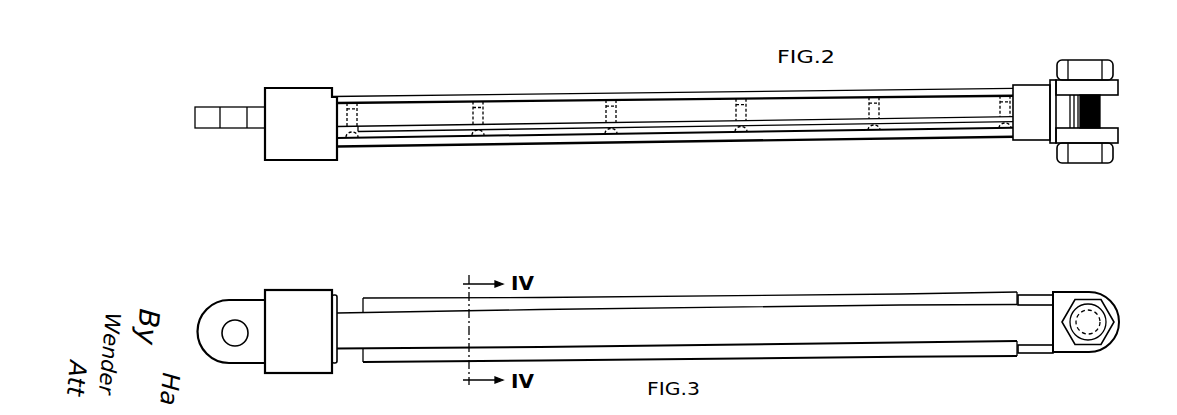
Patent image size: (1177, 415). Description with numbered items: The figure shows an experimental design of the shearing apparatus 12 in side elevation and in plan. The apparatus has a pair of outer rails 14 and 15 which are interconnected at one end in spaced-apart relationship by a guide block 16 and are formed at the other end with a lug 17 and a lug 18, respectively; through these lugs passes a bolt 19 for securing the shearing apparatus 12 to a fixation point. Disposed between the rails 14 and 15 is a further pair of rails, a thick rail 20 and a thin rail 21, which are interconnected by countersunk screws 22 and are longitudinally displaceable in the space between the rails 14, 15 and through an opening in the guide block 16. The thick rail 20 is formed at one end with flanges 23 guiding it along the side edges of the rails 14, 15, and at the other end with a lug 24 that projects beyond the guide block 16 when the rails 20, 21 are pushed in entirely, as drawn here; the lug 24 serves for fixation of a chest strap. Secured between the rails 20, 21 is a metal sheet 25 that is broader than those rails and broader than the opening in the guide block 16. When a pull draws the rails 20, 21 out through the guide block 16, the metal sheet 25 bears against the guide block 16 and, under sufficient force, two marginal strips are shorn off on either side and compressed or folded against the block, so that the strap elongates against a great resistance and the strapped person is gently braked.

In FIG. 2, the shearing apparatus 12 is at (672, 121).
In FIG. 3, the shearing apparatus 12 is at (677, 310).
In FIG. 2, the rail 14 is at (673, 95).
In FIG. 3, the rail 14 is at (897, 312).
In FIG. 2, the rail 15 is at (676, 139).
In FIG. 2, the guide block 16 is at (313, 157).
In FIG. 3, the guide block 16 is at (303, 367).
In FIG. 2, the lug 17 is at (1119, 88).
In FIG. 3, the lug 17 is at (1110, 340).
In FIG. 2, the lug 18 is at (1119, 137).
In FIG. 2, the bolt 19 is at (1089, 38).
In FIG. 3, the bolt 19 is at (1097, 308).
In FIG. 2, the thick rail 20 is at (460, 108).
In FIG. 2, the thin rail 21 is at (437, 137).
In FIG. 2, the countersunk screws 22 is at (880, 131).
In FIG. 2, the flanges 23 is at (1028, 90).
In FIG. 3, the flanges 23 is at (1035, 297).
In FIG. 2, the lug 24 is at (208, 107).
In FIG. 3, the lug 24 is at (238, 355).
In FIG. 2, the metal sheet 25 is at (530, 129).
In FIG. 3, the metal sheet 25 is at (785, 297).